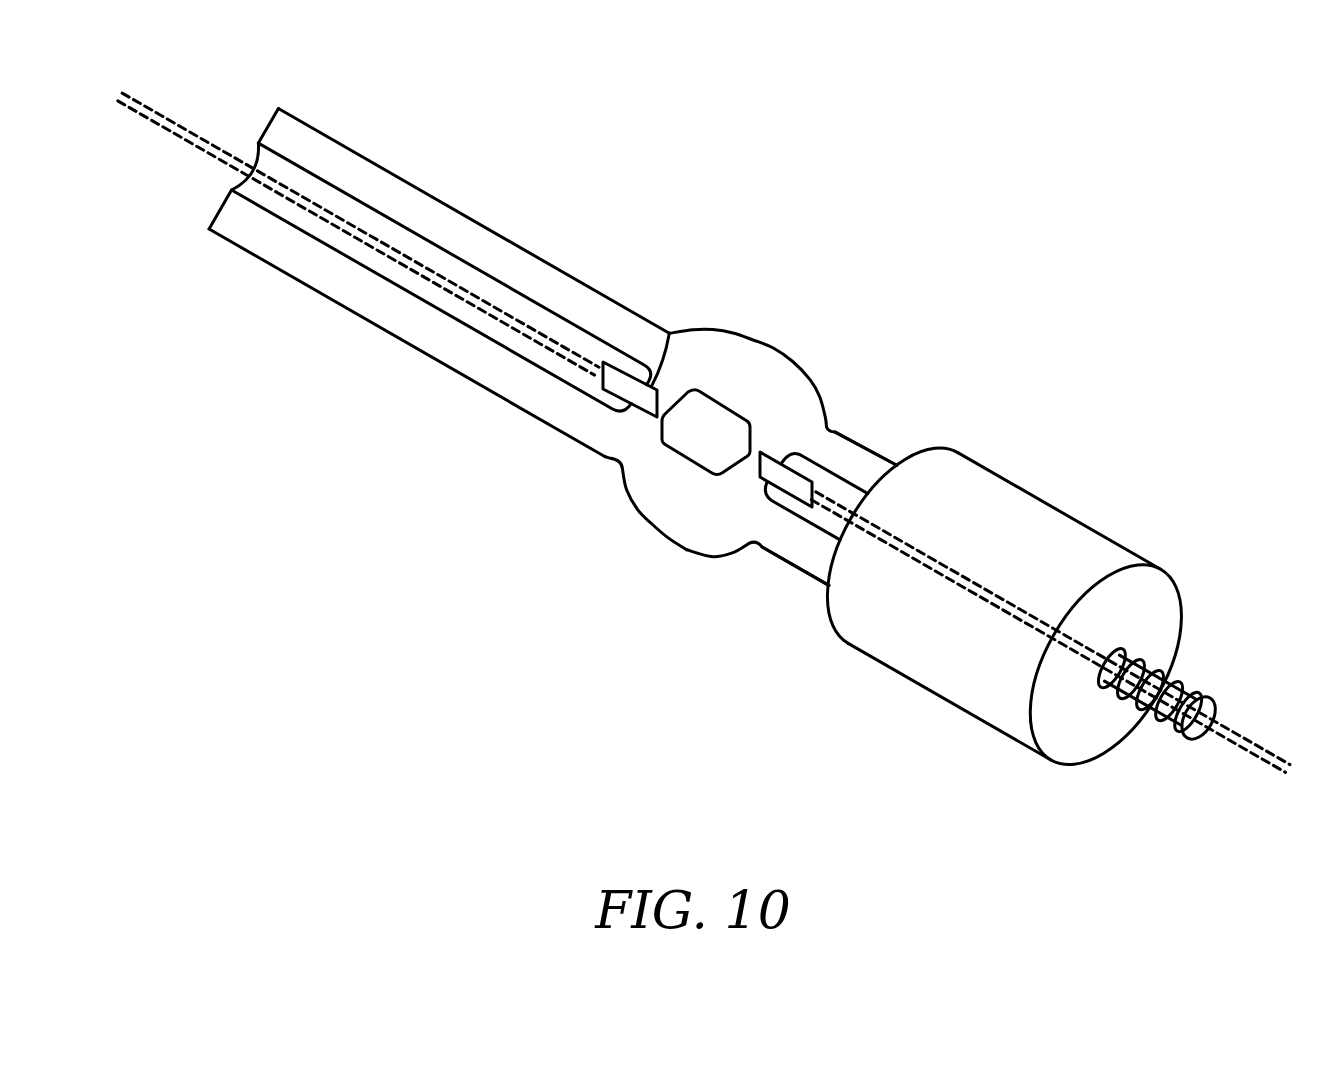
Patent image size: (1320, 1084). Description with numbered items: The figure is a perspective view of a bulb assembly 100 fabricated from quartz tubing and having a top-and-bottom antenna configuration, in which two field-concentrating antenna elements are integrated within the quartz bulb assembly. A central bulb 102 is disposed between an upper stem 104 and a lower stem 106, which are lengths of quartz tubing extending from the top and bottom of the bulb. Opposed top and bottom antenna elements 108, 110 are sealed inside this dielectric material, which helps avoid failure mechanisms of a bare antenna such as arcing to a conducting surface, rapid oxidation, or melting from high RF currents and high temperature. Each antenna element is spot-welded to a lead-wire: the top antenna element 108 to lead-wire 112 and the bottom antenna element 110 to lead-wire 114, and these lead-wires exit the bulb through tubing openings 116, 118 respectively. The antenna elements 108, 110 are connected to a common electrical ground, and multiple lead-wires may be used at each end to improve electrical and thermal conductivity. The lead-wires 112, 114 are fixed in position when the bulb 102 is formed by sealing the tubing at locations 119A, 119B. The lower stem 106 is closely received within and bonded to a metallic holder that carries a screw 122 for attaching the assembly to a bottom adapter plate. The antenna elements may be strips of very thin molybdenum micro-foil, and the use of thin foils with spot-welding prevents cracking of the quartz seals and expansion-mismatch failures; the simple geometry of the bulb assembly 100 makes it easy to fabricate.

The bulb assembly 100 is at (704, 424).
The central bulb 102 is at (688, 445).
The upper stem 104 is at (612, 345).
The lower stem 106 is at (838, 471).
The top antenna element 108 is at (677, 334).
The bottom antenna element 110 is at (775, 451).
The lead-wire 112 is at (572, 360).
The lead-wire 114 is at (828, 508).
The tubing opening 116 is at (277, 109).
The tubing opening 118 is at (1164, 568).
The sealing location 119A is at (620, 462).
The sealing location 119B is at (756, 548).
The screw 122 is at (1187, 684).